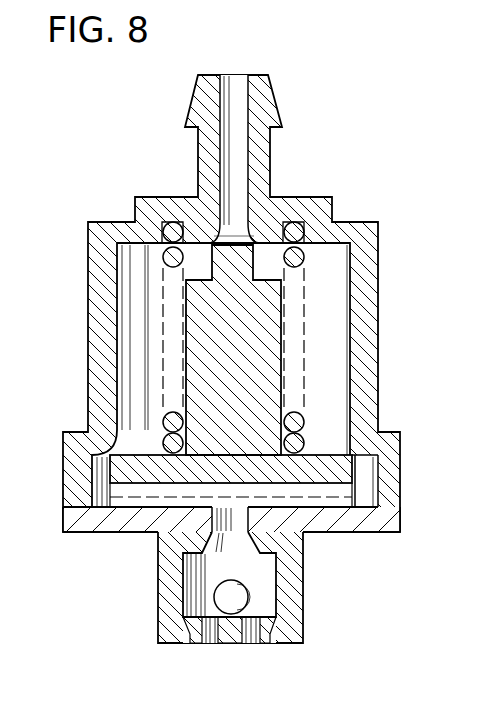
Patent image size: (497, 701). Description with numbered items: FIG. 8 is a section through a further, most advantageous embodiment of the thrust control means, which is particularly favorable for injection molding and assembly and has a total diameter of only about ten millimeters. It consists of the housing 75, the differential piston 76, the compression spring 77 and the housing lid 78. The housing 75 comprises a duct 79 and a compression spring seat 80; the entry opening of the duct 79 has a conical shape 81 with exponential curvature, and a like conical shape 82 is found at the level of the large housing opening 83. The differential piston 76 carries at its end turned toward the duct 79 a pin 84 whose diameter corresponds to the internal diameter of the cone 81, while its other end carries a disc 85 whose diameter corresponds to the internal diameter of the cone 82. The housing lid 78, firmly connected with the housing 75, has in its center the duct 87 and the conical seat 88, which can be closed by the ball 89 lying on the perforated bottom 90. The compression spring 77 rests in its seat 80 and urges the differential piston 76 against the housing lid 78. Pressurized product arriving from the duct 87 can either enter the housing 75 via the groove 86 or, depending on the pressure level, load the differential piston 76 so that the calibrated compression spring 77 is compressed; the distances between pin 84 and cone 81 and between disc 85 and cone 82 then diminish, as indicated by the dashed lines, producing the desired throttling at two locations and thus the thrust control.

The housing 75 is at (370, 246).
The differential piston 76 is at (262, 366).
The compression spring 77 is at (293, 416).
The housing lid 78 is at (377, 522).
The duct 79 is at (240, 163).
The compression spring seat 80 is at (304, 223).
The conical shape 81 is at (230, 226).
The conical shape 82 is at (114, 423).
The large housing opening 83 is at (366, 477).
The pin 84 is at (275, 265).
The disc 85 is at (338, 455).
The groove 86 is at (343, 492).
The duct 87 is at (156, 532).
The conical seat 88 is at (245, 542).
The ball 89 is at (248, 598).
The perforated bottom 90 is at (253, 636).